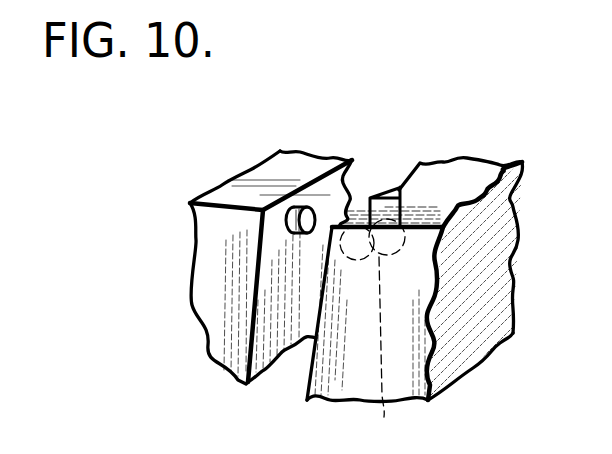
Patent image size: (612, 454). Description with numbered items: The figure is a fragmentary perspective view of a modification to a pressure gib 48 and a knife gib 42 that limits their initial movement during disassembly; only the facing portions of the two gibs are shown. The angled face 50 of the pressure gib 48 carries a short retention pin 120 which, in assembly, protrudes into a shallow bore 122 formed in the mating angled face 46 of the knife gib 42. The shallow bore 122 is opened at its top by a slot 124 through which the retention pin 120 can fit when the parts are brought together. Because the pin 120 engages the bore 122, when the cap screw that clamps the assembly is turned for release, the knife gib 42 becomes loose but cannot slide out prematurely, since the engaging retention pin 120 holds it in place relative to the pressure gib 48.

The knife gib 42 is at (480, 170).
The mating angled face 46 is at (305, 370).
The pressure gib 48 is at (329, 126).
The angled face 50 is at (338, 200).
The retention pin 120 is at (291, 234).
The shallow bore 122 is at (384, 417).
The slot 124 is at (401, 186).